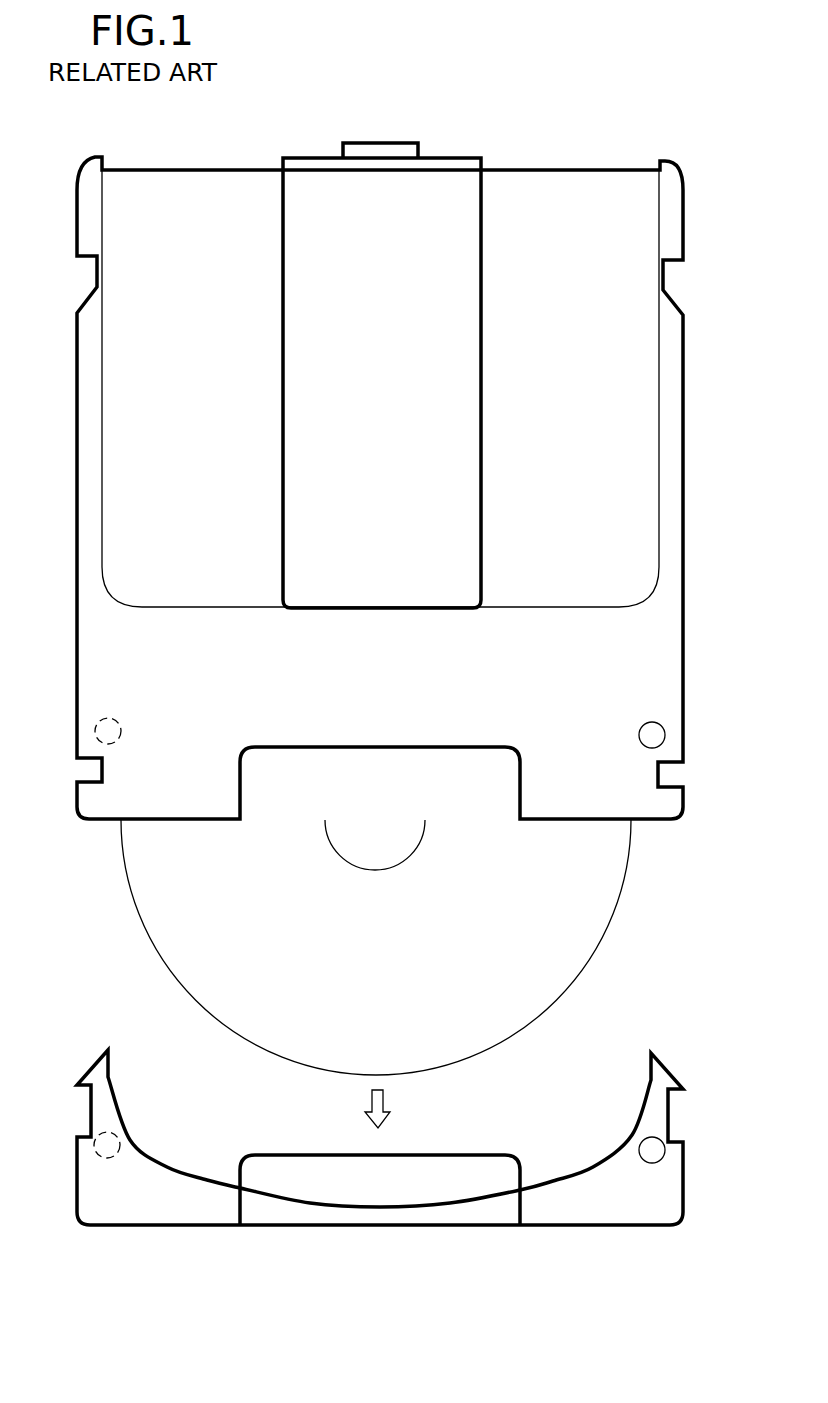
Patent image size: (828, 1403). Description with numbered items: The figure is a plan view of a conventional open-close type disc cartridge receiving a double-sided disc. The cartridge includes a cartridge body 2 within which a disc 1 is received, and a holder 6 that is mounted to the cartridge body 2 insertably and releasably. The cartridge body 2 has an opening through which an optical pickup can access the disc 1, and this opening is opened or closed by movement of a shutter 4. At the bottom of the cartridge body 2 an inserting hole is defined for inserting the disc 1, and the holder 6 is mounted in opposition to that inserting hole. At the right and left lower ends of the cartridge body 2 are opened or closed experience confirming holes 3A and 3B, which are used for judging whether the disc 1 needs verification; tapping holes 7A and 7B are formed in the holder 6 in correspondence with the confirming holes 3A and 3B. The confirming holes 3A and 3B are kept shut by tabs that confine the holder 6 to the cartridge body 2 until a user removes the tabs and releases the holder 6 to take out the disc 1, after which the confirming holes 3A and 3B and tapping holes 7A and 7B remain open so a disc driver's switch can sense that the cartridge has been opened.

The disc 1 is at (592, 935).
The cartridge body 2 is at (683, 352).
The opened or closed experience confirming hole 3A is at (654, 737).
The opened or closed experience confirming hole 3B is at (106, 720).
The shutter 4 is at (430, 168).
The holder 6 is at (683, 1152).
The tapping hole 7A is at (654, 1152).
The tapping hole 7B is at (105, 1135).